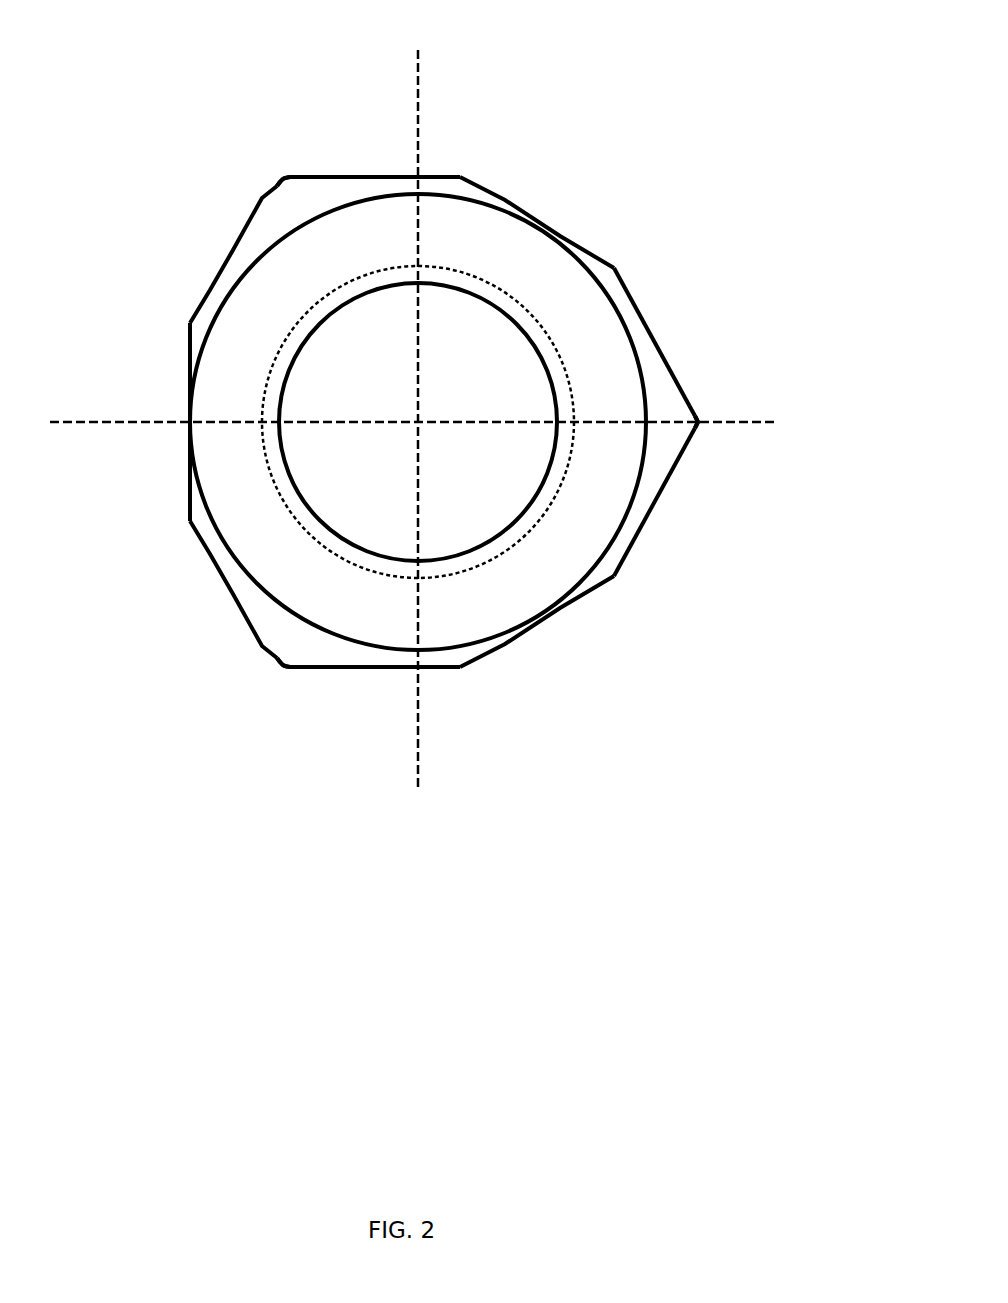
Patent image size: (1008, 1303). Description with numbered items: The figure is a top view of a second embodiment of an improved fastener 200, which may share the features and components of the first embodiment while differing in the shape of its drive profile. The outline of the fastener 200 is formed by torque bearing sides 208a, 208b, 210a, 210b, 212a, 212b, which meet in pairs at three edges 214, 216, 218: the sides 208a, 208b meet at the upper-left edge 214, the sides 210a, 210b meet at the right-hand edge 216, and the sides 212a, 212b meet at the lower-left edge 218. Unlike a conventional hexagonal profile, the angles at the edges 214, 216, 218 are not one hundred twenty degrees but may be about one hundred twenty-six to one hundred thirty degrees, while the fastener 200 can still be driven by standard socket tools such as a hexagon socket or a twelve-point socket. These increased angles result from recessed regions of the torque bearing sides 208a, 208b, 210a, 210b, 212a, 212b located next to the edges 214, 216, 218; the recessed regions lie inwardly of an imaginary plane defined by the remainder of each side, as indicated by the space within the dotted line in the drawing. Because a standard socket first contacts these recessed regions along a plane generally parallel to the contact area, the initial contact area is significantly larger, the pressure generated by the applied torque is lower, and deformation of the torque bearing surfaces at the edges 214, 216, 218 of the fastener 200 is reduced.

The fastener 200 is at (128, 103).
The torque bearing side 208a is at (225, 258).
The torque bearing side 208b is at (355, 172).
The torque bearing side 210a is at (677, 368).
The torque bearing side 210b is at (670, 480).
The torque bearing side 212a is at (335, 675).
The torque bearing side 212b is at (238, 605).
The edge 214 is at (275, 172).
The edge 216 is at (703, 418).
The edge 218 is at (272, 671).